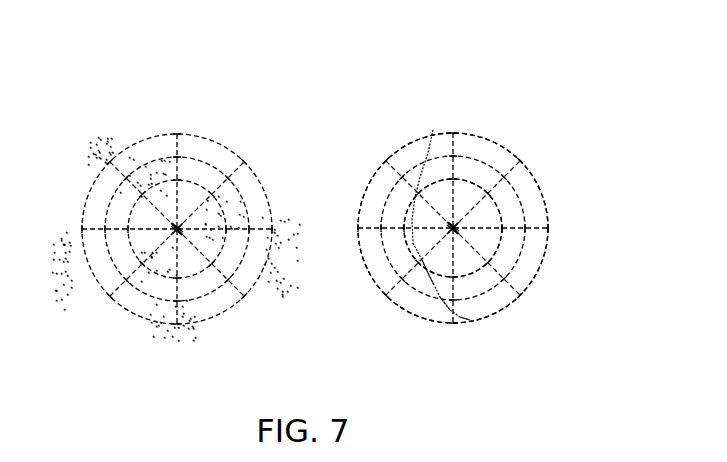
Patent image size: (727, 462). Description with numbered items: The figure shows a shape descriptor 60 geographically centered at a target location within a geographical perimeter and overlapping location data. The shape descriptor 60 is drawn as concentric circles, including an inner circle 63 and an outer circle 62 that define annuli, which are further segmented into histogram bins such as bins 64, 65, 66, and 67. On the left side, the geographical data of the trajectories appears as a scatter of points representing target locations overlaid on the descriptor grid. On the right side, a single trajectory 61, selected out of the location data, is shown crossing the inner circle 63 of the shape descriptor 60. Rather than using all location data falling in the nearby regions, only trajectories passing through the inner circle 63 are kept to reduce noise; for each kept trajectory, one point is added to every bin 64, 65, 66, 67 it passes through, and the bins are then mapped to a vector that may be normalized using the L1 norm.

The shape descriptor 60 is at (527, 108).
The trajectory 61 is at (433, 135).
The outer circle 62 is at (540, 188).
The inner circle 63 is at (502, 226).
The bin 64 is at (432, 265).
The bin 65 is at (420, 285).
The bin 66 is at (438, 310).
The bin 67 is at (472, 312).